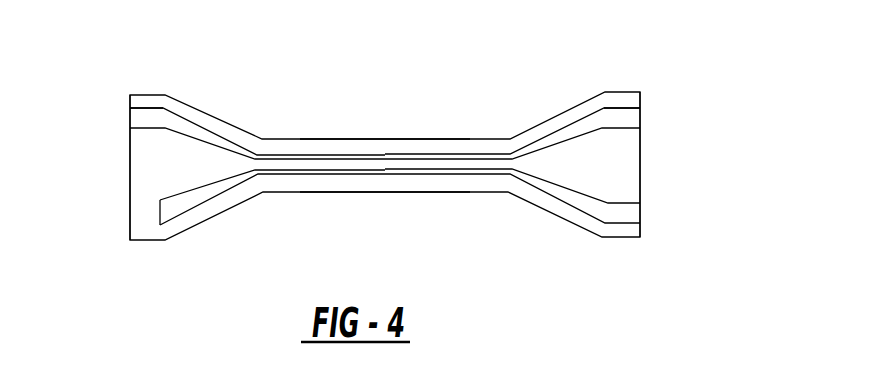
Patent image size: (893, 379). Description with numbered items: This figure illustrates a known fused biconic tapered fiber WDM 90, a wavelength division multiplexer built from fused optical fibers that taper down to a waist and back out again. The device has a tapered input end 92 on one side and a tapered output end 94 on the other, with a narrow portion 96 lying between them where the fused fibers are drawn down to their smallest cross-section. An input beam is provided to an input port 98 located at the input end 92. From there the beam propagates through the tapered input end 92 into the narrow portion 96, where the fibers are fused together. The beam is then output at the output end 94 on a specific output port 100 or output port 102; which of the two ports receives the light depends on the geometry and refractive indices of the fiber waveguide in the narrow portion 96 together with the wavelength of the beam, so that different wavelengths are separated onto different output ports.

The fused biconic tapered fiber WDM 90 is at (383, 71).
The tapered input end 92 is at (143, 178).
The tapered output end 94 is at (628, 168).
The narrow portion 96 is at (379, 182).
The input port 98 is at (142, 118).
The output port 100 is at (627, 117).
The output port 102 is at (633, 215).